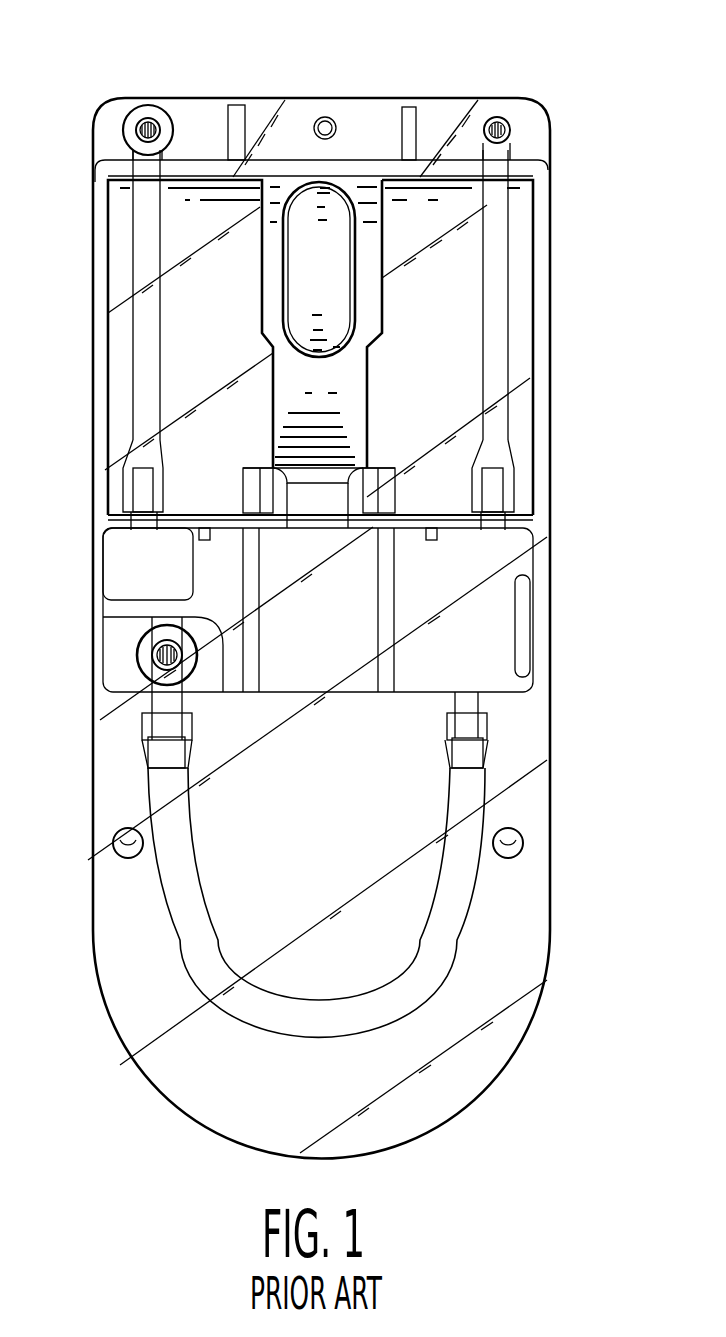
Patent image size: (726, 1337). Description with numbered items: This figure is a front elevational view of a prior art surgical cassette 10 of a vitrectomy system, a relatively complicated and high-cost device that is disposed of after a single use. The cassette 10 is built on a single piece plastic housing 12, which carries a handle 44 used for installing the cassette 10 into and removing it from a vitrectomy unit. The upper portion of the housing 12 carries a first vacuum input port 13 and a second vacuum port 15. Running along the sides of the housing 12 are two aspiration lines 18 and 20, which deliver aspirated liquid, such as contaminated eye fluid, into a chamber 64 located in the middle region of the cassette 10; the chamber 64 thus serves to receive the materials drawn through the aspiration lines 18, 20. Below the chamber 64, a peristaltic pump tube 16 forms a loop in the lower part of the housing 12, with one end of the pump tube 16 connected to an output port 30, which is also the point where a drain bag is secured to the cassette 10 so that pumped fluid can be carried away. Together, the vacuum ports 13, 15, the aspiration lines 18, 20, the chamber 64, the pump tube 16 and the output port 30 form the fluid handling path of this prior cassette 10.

The cassette 10 is at (305, 60).
The housing 12 is at (135, 1093).
The first vacuum input port 13 is at (512, 128).
The second vacuum port 15 is at (148, 104).
The peristaltic pump tube 16 is at (462, 912).
The aspiration line 18 is at (478, 387).
The aspiration line 20 is at (161, 330).
The output port 30 is at (146, 633).
The handle 44 is at (383, 313).
The chamber 64 is at (320, 656).